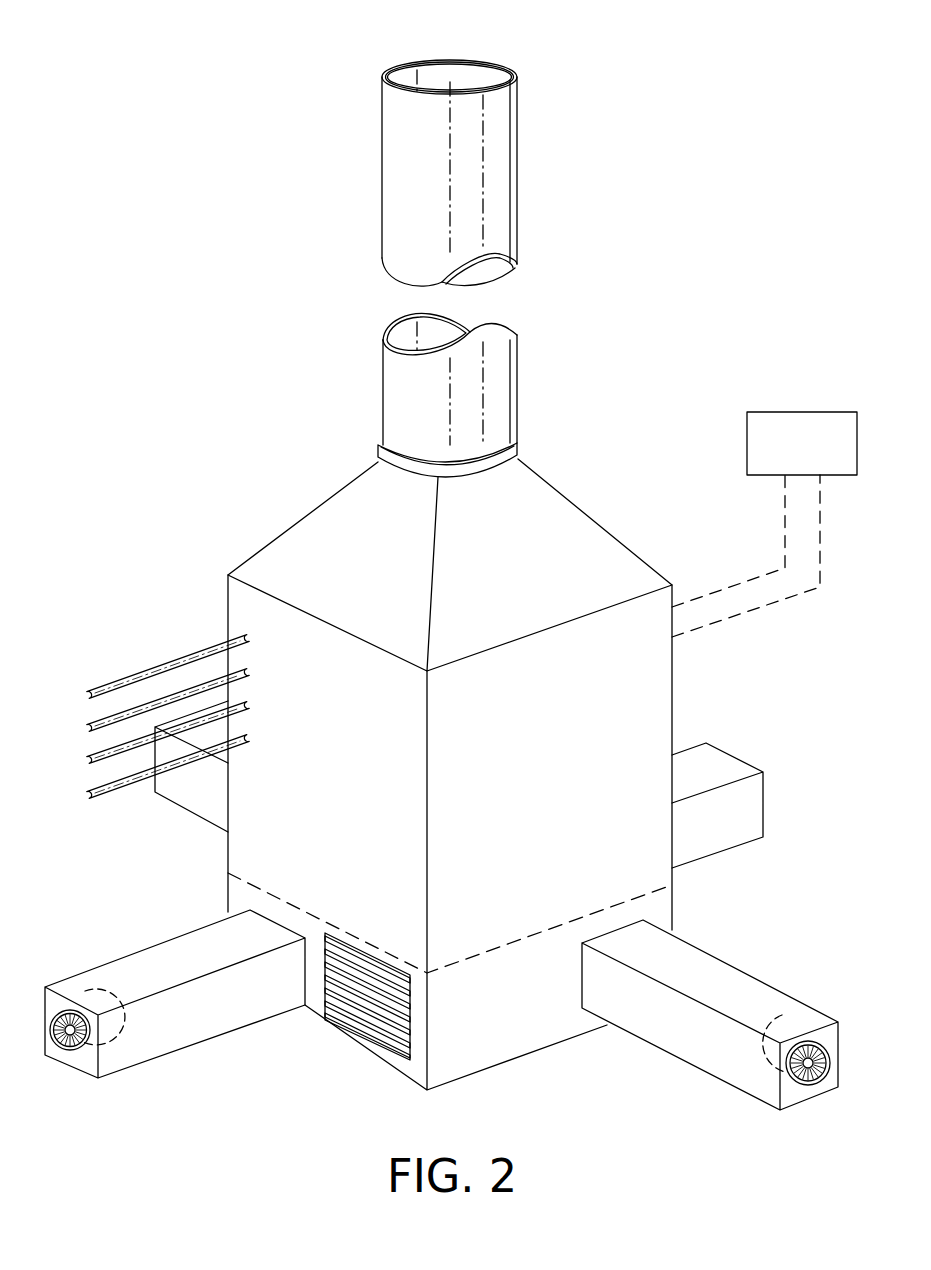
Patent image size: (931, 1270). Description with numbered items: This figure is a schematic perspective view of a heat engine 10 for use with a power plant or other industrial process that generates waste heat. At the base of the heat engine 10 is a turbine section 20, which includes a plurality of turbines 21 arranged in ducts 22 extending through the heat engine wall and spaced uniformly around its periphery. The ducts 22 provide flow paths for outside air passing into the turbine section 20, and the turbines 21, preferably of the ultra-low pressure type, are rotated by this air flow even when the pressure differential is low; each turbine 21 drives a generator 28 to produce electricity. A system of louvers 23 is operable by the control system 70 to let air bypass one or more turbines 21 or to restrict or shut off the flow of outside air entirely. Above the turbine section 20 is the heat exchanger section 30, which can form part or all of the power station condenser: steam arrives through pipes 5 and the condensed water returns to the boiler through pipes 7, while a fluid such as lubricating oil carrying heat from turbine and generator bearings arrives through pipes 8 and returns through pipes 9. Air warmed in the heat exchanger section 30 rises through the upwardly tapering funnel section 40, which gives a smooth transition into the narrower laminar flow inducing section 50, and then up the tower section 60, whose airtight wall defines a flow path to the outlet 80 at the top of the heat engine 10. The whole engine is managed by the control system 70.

The pipes 5 is at (107, 752).
The pipes 7 is at (107, 787).
The pipes 8 is at (107, 685).
The pipes 9 is at (107, 720).
The heat engine 10 is at (263, 408).
The turbine section 20 is at (508, 1048).
The turbines 21 is at (58, 1050).
The ducts 22 is at (195, 1032).
The louvers 23 is at (373, 1035).
The generator 28 is at (83, 995).
The heat exchanger section 30 is at (687, 668).
The funnel section 40 is at (593, 495).
The laminar flow inducing section 50 is at (535, 417).
The tower section 60 is at (528, 165).
The control system 70 is at (803, 412).
The outlet 80 is at (430, 83).